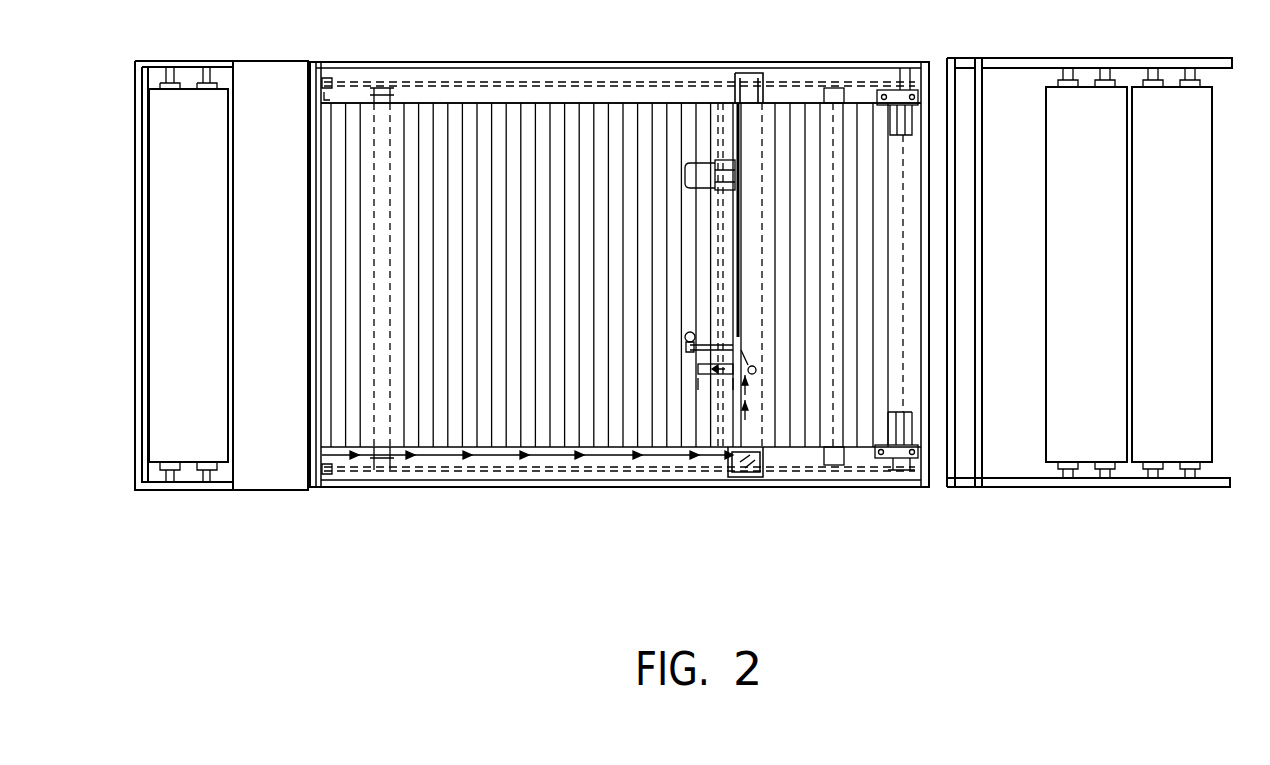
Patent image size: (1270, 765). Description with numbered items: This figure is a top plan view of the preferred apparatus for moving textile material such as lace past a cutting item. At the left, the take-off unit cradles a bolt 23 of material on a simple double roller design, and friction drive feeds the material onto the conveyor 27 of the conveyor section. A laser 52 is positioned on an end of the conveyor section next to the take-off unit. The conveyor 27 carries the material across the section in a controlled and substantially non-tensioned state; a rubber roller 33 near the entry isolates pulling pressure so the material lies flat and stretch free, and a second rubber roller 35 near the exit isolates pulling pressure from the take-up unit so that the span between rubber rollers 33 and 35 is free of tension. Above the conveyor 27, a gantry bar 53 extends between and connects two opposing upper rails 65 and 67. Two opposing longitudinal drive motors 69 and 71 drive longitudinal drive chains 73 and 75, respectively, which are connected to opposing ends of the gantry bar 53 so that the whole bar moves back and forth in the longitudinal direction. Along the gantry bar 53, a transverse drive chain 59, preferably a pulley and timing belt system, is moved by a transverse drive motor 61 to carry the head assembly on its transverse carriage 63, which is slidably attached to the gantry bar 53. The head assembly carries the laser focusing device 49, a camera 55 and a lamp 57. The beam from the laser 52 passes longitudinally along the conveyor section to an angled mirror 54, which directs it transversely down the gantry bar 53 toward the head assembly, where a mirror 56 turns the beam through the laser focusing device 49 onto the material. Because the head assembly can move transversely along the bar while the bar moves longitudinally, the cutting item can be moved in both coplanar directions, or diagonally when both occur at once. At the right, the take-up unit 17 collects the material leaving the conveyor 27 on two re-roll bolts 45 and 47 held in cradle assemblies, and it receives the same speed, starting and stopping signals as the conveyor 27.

The take-up unit 17 is at (1010, 488).
The bolt 23 is at (172, 289).
The conveyor 27 is at (537, 292).
The rubber roller 33 is at (409, 147).
The second rubber roller 35 is at (840, 224).
The re-roll bolt 45 is at (1072, 289).
The re-roll bolt 47 is at (1165, 289).
The laser focusing device 49 is at (700, 387).
The laser 52 is at (255, 289).
The gantry bar 53 is at (764, 252).
The mirror 54 is at (748, 478).
The camera 55 is at (698, 371).
The mirror 56 is at (754, 366).
The lamp 57 is at (685, 341).
The transverse drive chain 59 is at (722, 162).
The transverse drive motor 61 is at (690, 188).
The transverse carriage 63 is at (745, 352).
The upper rail 65 is at (550, 447).
The upper rail 67 is at (575, 104).
The longitudinal drive motor 69 is at (896, 136).
The longitudinal drive motor 71 is at (890, 413).
The longitudinal drive chain 73 is at (470, 479).
The longitudinal drive chain 75 is at (575, 78).